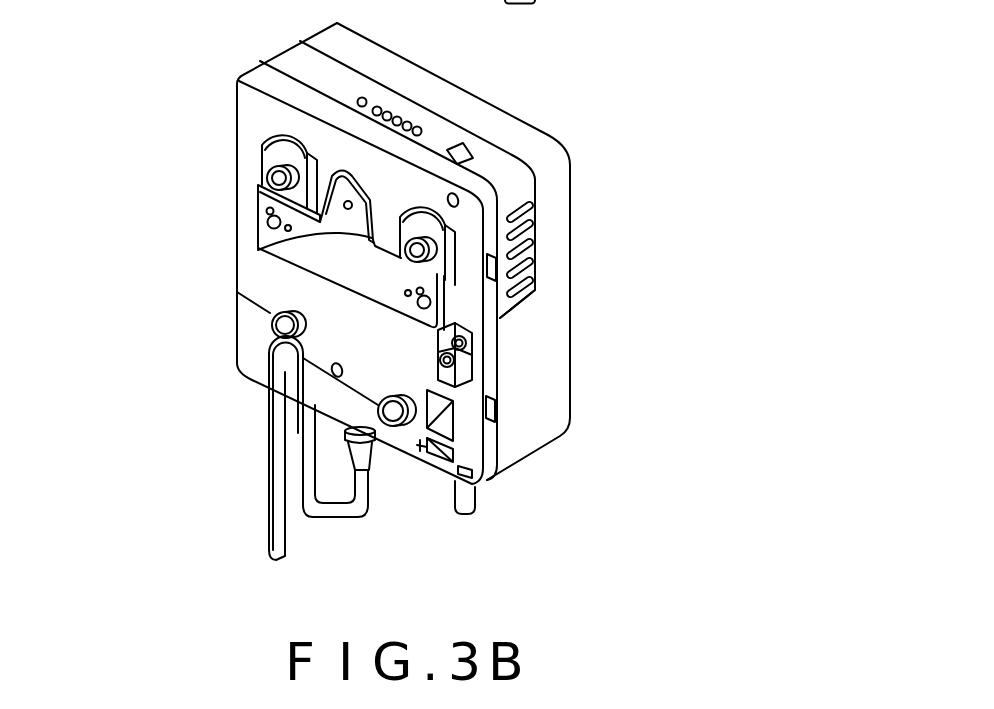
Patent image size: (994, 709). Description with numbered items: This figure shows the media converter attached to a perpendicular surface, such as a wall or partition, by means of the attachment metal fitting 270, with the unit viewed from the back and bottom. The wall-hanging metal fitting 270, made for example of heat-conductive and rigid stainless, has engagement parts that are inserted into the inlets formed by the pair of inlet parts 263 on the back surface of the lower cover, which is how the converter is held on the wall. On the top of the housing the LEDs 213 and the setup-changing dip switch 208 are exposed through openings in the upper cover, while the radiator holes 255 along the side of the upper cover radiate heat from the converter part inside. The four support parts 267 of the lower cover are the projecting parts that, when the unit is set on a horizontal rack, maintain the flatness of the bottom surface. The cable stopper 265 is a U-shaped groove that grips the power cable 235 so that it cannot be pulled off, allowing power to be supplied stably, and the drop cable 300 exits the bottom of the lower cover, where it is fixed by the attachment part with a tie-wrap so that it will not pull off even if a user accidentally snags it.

The LEDs 213 is at (407, 121).
The setup-changing dip switch 208 is at (474, 155).
The inlet parts 263 is at (470, 255).
The radiator holes 255 is at (501, 276).
The attachment metal fitting 270 is at (473, 337).
The support parts 267 is at (262, 176).
The cable stopper 265 is at (266, 392).
The power cable 235 is at (353, 513).
The drop cable 300 is at (476, 510).